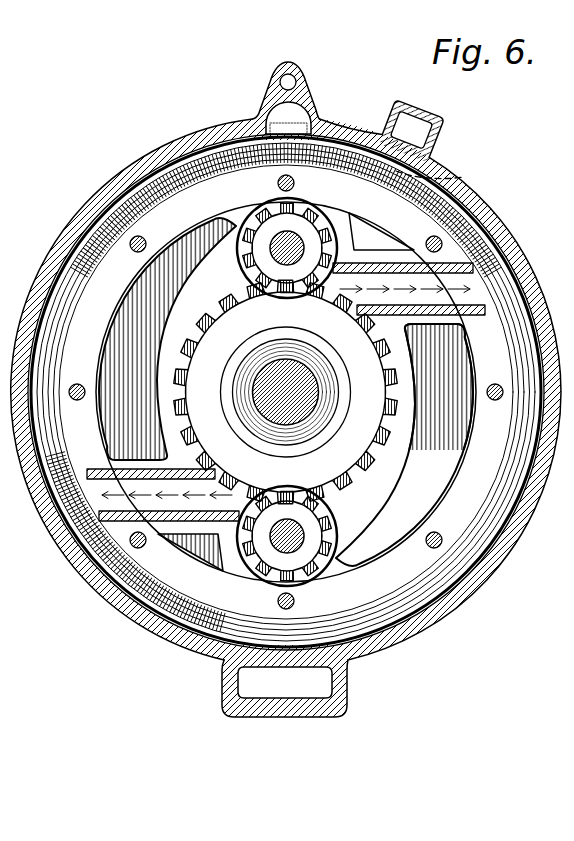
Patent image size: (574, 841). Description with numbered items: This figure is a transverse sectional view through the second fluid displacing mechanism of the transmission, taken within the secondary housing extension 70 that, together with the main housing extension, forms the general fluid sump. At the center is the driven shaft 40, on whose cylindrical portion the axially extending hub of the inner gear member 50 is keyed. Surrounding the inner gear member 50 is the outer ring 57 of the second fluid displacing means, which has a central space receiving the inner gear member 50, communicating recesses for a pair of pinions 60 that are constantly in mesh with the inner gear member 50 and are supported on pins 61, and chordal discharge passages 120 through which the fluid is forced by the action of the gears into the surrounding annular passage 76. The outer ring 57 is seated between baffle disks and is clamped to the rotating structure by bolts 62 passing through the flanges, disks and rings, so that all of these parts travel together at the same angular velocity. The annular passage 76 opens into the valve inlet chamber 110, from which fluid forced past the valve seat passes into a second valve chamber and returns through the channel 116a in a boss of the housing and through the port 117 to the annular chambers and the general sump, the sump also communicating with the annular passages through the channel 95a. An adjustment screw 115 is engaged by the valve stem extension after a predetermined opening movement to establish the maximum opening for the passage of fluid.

The driven shaft 40 is at (290, 398).
The inner gear member 50 is at (352, 442).
The outer ring 57 is at (232, 192).
The pinion 60 is at (312, 215).
The pin 61 is at (271, 239).
The bolt 62 is at (495, 388).
The secondary housing extension 70 is at (86, 551).
The annular passage 76 is at (472, 224).
The channel 95a is at (278, 689).
The valve inlet chamber 110 is at (308, 118).
The adjustment screw 115 is at (293, 74).
The channel 116a is at (425, 125).
The port 117 is at (450, 180).
The chordal discharge passage 120 is at (479, 292).